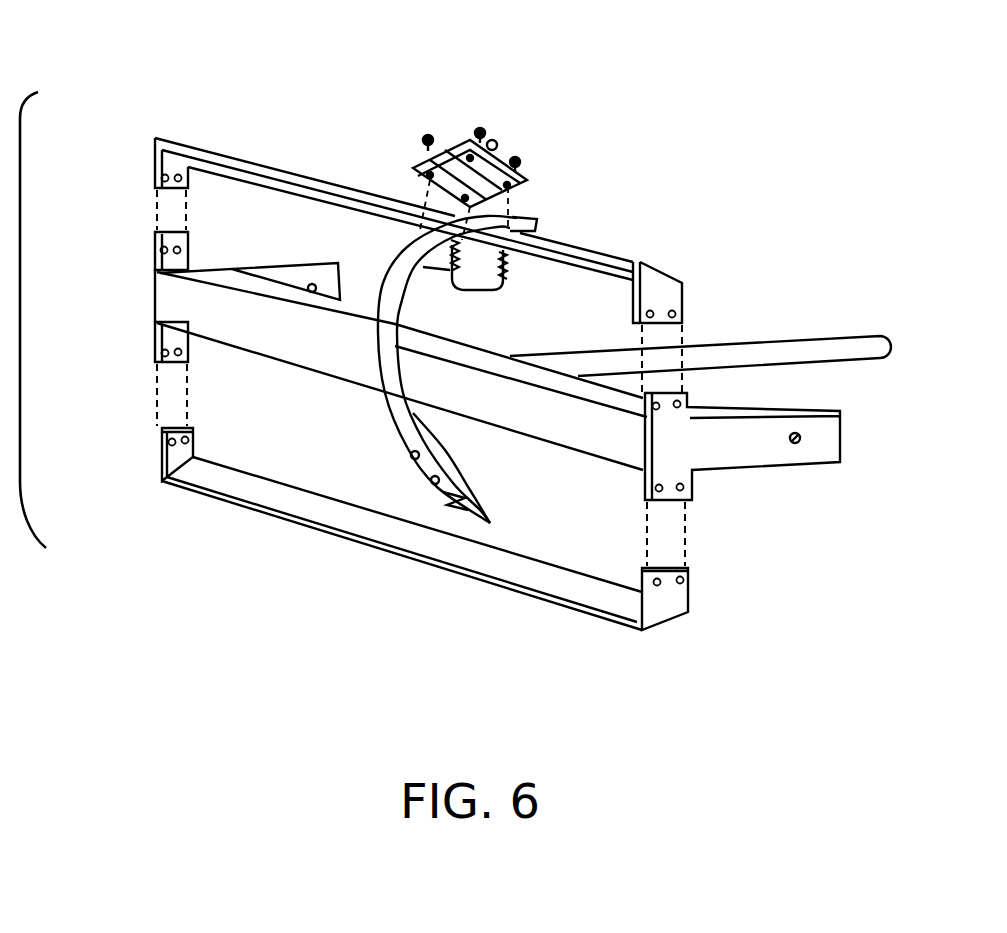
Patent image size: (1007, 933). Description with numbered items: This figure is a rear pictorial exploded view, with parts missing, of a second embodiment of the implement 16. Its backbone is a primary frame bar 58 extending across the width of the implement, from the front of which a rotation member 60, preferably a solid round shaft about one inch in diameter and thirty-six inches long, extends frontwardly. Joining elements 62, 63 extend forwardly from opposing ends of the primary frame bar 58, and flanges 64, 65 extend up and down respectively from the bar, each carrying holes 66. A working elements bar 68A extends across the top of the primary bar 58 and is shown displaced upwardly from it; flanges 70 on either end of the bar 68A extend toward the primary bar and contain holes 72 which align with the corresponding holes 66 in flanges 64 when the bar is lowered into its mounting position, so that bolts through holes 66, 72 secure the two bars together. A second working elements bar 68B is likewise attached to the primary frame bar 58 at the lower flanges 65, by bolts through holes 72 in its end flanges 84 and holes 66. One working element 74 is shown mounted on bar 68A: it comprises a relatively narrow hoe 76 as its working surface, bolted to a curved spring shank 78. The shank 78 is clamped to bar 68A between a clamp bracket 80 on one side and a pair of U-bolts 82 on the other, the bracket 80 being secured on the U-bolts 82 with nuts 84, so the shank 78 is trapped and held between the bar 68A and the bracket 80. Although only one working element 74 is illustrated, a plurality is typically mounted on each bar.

The implement 16 is at (375, 78).
The primary frame bar 58 is at (272, 340).
The rotation member 60 is at (778, 345).
The joining element 62 is at (296, 262).
The joining element 63 is at (830, 462).
The flange 64 is at (188, 262).
The flange 65 is at (165, 368).
The holes 66 is at (155, 242).
The working elements bar 68A is at (342, 186).
The second working elements bar 68B is at (252, 510).
The flange 70 is at (160, 158).
The holes 72 is at (160, 170).
The working element 74 is at (435, 372).
The hoe 76 is at (490, 512).
The spring shank 78 is at (372, 383).
The clamp bracket 80 is at (525, 182).
The U-bolts 82 is at (437, 270).
The nuts 84 is at (165, 478).